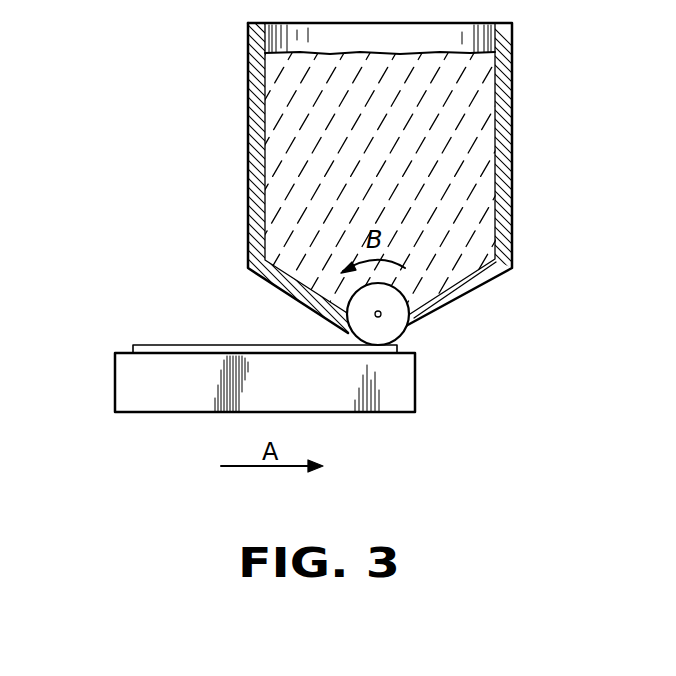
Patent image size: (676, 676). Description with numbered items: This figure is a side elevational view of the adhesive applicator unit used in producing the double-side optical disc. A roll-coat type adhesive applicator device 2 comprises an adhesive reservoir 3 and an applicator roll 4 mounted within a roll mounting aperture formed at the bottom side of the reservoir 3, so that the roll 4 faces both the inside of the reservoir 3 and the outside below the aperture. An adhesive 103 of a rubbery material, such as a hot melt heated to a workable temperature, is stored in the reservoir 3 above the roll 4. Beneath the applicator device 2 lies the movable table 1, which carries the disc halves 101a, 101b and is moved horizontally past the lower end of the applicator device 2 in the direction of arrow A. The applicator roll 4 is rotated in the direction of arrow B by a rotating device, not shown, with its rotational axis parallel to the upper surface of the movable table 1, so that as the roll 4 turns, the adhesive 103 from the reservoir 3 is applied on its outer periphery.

The movable table 1 is at (392, 378).
The roll-coat type adhesive applicator device 2 is at (338, 184).
The adhesive reservoir 3 is at (512, 190).
The applicator roll 4 is at (403, 312).
The adhesive 103 is at (280, 132).
The thin film layer 101a is at (227, 315).
The thin film layer 101b is at (170, 345).